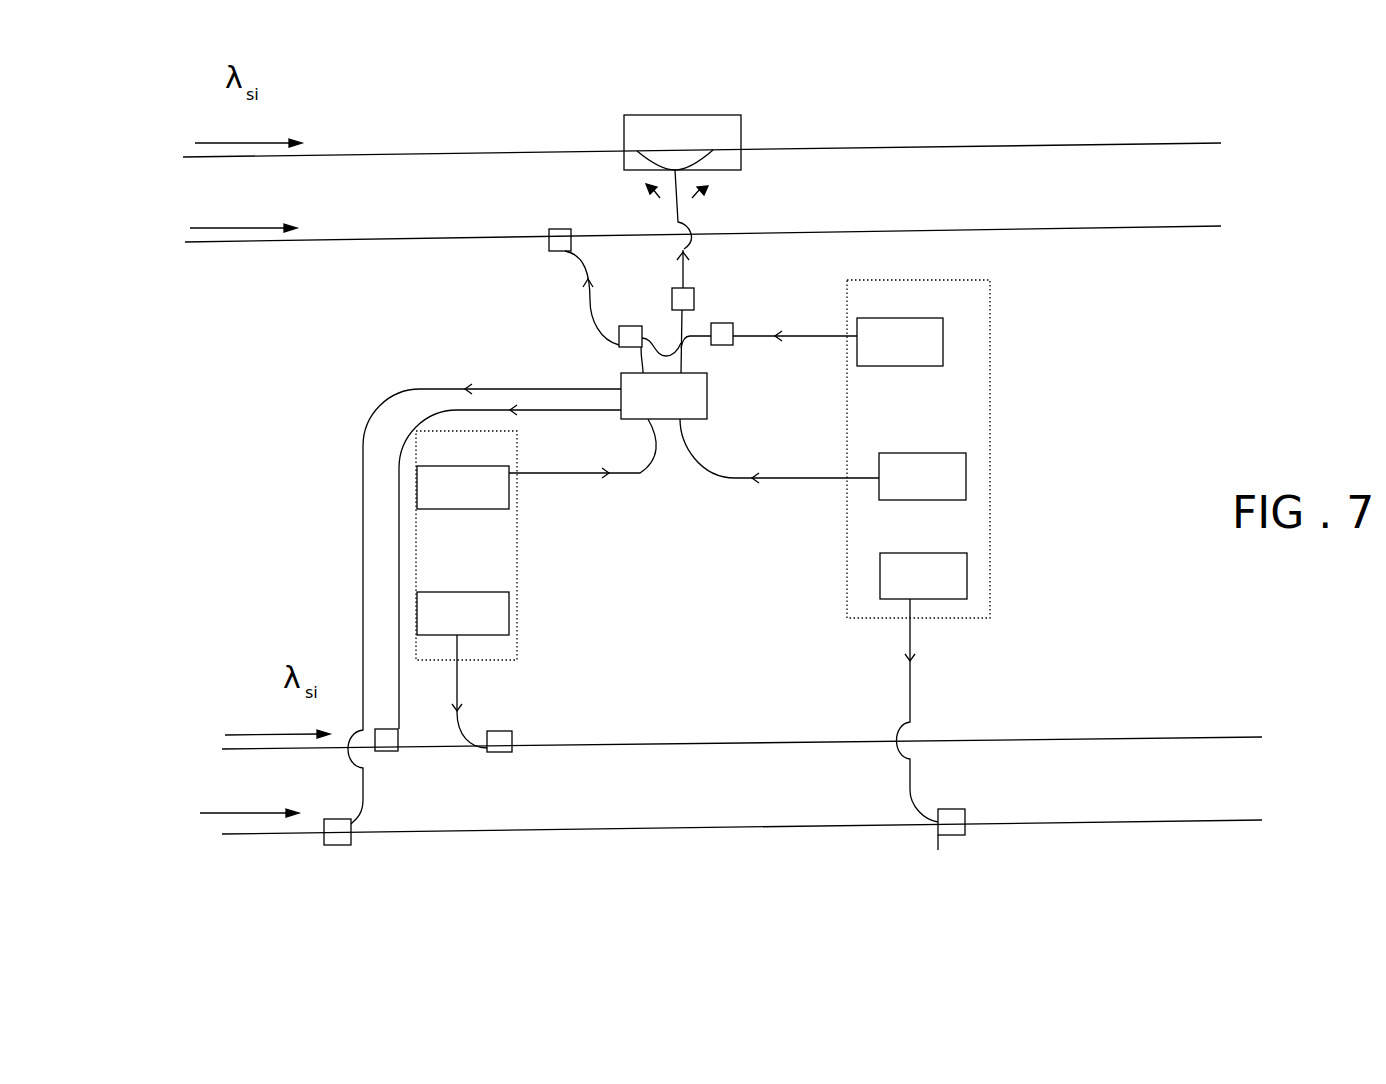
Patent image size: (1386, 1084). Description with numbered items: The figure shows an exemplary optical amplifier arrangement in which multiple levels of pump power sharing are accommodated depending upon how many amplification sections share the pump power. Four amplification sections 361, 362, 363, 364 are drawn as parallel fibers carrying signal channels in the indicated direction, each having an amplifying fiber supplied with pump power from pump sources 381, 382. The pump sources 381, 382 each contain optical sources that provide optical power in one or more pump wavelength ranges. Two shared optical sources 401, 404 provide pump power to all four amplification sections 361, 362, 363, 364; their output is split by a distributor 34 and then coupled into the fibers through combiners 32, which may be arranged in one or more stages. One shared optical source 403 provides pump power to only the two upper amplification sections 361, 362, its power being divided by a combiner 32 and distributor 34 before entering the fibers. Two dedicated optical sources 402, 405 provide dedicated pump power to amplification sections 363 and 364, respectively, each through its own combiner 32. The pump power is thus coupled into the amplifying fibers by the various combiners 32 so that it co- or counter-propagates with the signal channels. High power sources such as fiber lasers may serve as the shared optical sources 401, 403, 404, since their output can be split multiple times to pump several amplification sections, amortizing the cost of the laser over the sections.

The combiner 32 is at (553, 230).
The distributor 34 is at (730, 323).
The first amplification section 361 is at (1062, 142).
The second amplification section 362 is at (447, 237).
The third amplification section 363 is at (1088, 742).
The fourth amplification section 364 is at (1103, 826).
The pump source 381 is at (1093, 493).
The pump source 382 is at (268, 512).
The shared optical source 401 is at (509, 498).
The dedicated optical source 402 is at (509, 604).
The shared optical source 403 is at (943, 333).
The shared optical source 404 is at (966, 485).
The dedicated optical source 405 is at (967, 583).